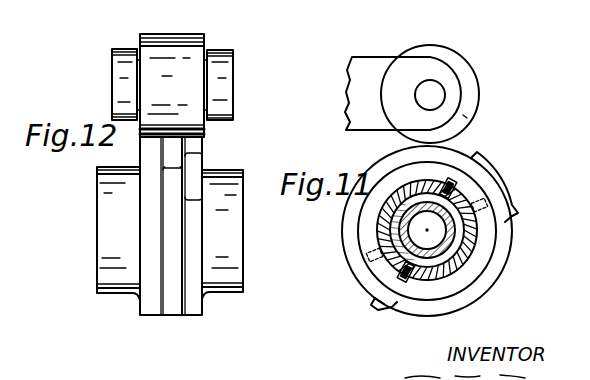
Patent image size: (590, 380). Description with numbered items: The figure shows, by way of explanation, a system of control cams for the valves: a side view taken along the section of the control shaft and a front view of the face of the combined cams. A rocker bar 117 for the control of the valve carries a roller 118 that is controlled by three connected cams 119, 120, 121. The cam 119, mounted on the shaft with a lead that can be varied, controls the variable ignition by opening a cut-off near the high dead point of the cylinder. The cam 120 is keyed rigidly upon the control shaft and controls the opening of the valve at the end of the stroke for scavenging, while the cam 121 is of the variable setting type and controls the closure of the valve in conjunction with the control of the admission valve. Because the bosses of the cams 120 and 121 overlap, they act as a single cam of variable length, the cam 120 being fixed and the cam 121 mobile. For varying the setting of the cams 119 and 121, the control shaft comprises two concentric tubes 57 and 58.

In FIG. 11, the concentric tube 57 is at (452, 273).
In FIG. 11, the concentric tube 58 is at (466, 237).
In FIG. 12, the rocker bar 117 is at (234, 51).
In FIG. 12, the roller 118 is at (182, 50).
In FIG. 11, the roller 118 is at (450, 60).
In FIG. 12, the cam 119 is at (138, 300).
In FIG. 11, the cam 119 is at (393, 307).
In FIG. 12, the cam 120 is at (164, 316).
In FIG. 11, the cam 120 is at (488, 163).
In FIG. 12, the cam 121 is at (196, 316).
In FIG. 11, the cam 121 is at (513, 208).